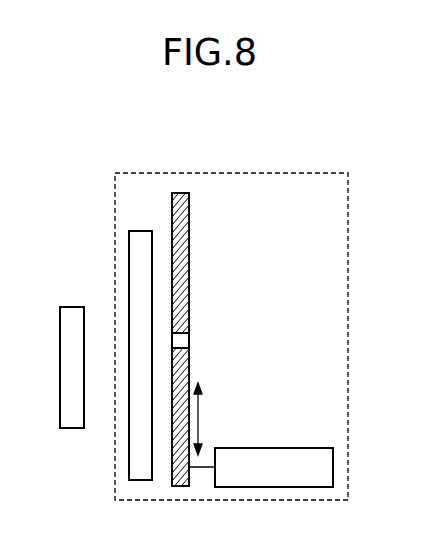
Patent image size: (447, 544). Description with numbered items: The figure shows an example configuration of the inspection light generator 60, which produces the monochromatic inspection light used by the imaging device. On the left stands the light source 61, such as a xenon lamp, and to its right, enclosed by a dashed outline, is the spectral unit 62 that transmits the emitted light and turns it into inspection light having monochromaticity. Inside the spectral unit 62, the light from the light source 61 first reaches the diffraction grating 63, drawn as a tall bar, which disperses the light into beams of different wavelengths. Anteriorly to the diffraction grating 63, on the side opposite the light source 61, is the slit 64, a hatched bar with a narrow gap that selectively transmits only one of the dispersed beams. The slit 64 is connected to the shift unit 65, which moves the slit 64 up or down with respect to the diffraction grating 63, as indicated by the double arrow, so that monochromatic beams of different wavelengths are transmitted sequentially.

The inspection light generator 60 is at (317, 149).
The light source 61 is at (67, 307).
The spectral unit 62 is at (133, 173).
The diffraction grating 63 is at (133, 231).
The slit 64 is at (190, 220).
The shift unit 65 is at (303, 448).